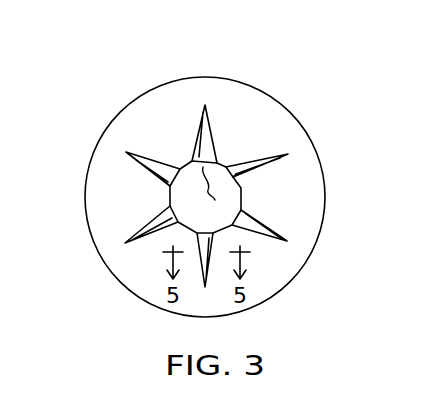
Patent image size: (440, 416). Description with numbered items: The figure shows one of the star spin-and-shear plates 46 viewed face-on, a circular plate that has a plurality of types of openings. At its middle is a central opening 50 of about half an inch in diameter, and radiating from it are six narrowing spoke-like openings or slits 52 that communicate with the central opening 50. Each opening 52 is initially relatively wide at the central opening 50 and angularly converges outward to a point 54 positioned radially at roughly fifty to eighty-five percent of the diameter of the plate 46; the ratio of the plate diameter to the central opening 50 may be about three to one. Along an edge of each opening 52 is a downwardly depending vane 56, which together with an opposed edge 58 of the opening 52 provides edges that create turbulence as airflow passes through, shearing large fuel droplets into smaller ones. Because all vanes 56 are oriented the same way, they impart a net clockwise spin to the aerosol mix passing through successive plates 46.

The star spin-and-shear plate 46 is at (336, 81).
The central opening 50 is at (205, 176).
The spoke-like opening 52 is at (167, 173).
The point 54 is at (128, 153).
The downwardly depending vane 56 is at (152, 173).
The opposed edge 58 is at (126, 244).